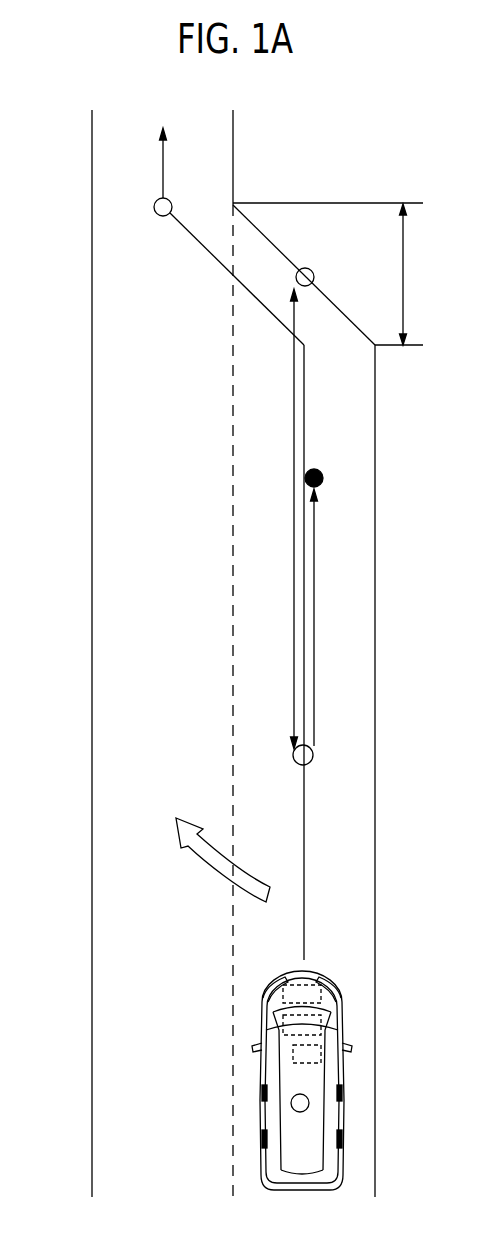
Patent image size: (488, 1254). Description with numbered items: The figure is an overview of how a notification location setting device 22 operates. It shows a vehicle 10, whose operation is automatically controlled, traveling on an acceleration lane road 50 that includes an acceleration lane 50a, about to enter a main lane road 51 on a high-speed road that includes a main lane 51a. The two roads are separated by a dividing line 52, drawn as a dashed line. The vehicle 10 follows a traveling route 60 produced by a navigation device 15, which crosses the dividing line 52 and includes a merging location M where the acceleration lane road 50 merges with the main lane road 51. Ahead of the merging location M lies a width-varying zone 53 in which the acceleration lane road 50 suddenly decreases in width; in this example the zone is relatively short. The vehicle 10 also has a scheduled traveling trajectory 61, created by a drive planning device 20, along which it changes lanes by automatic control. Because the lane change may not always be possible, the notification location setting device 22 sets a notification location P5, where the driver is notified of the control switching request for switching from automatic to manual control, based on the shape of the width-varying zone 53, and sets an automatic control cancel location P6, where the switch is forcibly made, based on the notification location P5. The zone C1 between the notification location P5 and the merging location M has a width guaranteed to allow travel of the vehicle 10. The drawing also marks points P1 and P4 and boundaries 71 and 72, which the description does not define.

The vehicle 10 is at (330, 1147).
The navigation device 15 is at (343, 990).
The drive planning device 20 is at (340, 1018).
The notification location setting device 22 is at (343, 1052).
The acceleration lane road 50 is at (354, 942).
The acceleration lane 50a is at (365, 822).
The main lane road 51 is at (115, 1003).
The main lane 51a is at (196, 942).
The dividing line 52 is at (233, 593).
The width-varying zone 53 is at (337, 274).
The traveling route 60 is at (304, 390).
The scheduled traveling trajectory 61 is at (186, 824).
The lane boundary 71 is at (487, 985).
The lane boundary 72 is at (475, 566).
The merging location M is at (171, 199).
The vehicle position P1 is at (309, 1099).
The target point P4 is at (311, 269).
The notification location P5 is at (292, 753).
The automatic control cancel location P6 is at (323, 476).
The zone C1 is at (278, 519).